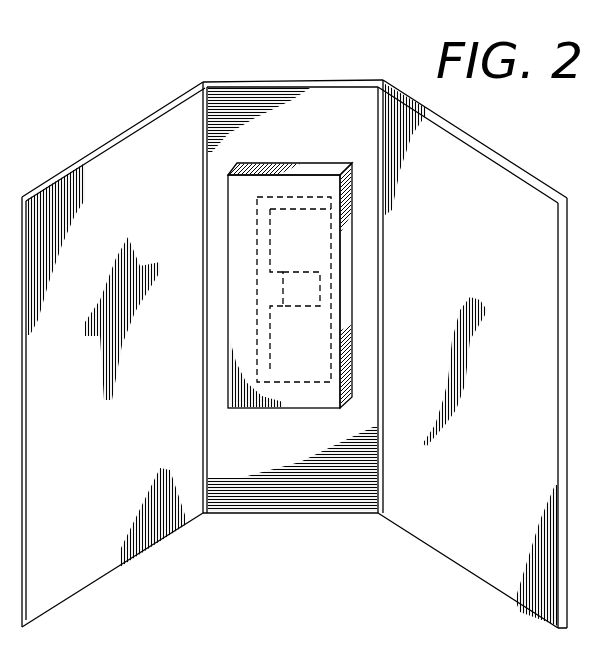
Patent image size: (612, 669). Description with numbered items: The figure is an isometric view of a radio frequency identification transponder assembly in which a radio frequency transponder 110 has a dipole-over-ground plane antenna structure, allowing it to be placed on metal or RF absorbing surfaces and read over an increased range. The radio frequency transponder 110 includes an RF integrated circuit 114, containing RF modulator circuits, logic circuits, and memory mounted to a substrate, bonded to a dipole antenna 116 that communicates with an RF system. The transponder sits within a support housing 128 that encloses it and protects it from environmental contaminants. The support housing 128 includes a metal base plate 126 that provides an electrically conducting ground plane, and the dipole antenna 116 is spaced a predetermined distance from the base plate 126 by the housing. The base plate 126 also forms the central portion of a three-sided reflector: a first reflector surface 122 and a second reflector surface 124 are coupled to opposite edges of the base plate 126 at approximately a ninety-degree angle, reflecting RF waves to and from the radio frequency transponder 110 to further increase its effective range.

The radio frequency transponder 110 is at (299, 386).
The RF integrated circuit 114 is at (322, 296).
The dipole antenna 116 is at (270, 240).
The first reflector surface 122 is at (50, 577).
The second reflector surface 124 is at (481, 545).
The base plate 126 is at (239, 504).
The support housing 128 is at (328, 398).